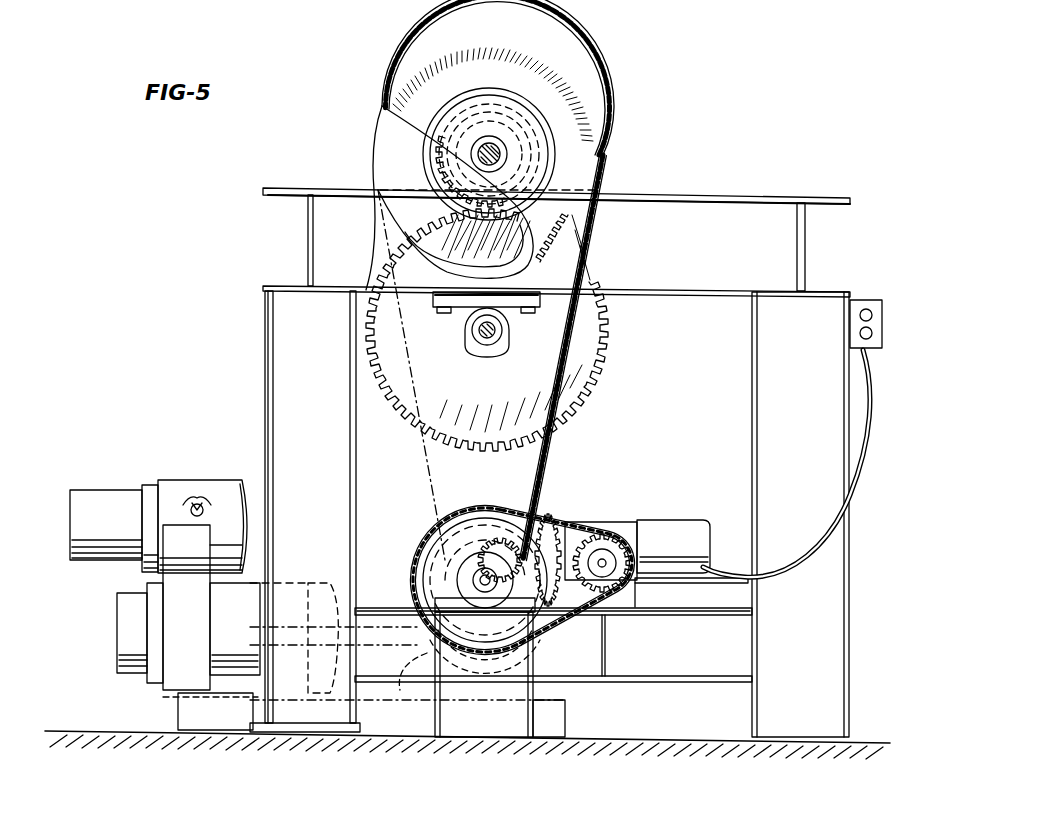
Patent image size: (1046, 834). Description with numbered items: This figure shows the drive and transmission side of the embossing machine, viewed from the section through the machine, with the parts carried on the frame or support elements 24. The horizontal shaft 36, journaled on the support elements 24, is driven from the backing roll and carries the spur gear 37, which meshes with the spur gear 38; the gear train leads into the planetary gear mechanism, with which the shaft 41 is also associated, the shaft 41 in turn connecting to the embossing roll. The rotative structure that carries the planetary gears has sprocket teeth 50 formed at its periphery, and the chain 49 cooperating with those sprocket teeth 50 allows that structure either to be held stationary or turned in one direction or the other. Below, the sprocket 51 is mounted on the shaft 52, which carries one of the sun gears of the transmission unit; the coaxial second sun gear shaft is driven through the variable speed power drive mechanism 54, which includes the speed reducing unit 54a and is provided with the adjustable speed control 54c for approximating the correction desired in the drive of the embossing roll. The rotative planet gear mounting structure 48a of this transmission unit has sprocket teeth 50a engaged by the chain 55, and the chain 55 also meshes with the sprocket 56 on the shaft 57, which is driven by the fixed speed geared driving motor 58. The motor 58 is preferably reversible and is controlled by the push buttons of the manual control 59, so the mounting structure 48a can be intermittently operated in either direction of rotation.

The frame or support elements 24 is at (768, 392).
The shaft 36 is at (500, 330).
The spur gear 37 is at (598, 396).
The spur gear 38 is at (432, 160).
The shaft 41 is at (507, 152).
The chain 49 is at (547, 475).
The sprocket teeth 50 is at (585, 236).
The sprocket teeth 50a is at (553, 625).
The sprocket 51 is at (505, 545).
The shaft 52 is at (478, 580).
The rotative planet gear mounting structure 48a is at (548, 528).
The variable speed power drive mechanism 54 is at (182, 472).
The speed reducing unit 54a is at (330, 600).
The speed control 54c is at (200, 502).
The chain 55 is at (606, 616).
The sprocket 56 is at (606, 530).
The shaft 57 is at (630, 580).
The fixed speed geared driving motor 58 is at (680, 526).
The manual control 59 is at (854, 300).